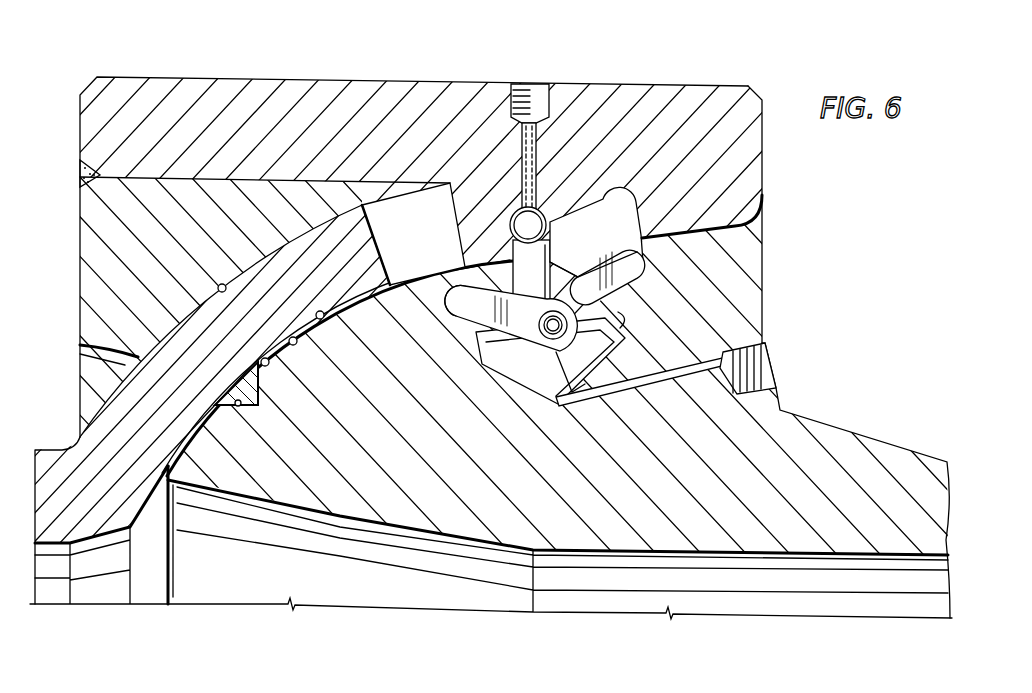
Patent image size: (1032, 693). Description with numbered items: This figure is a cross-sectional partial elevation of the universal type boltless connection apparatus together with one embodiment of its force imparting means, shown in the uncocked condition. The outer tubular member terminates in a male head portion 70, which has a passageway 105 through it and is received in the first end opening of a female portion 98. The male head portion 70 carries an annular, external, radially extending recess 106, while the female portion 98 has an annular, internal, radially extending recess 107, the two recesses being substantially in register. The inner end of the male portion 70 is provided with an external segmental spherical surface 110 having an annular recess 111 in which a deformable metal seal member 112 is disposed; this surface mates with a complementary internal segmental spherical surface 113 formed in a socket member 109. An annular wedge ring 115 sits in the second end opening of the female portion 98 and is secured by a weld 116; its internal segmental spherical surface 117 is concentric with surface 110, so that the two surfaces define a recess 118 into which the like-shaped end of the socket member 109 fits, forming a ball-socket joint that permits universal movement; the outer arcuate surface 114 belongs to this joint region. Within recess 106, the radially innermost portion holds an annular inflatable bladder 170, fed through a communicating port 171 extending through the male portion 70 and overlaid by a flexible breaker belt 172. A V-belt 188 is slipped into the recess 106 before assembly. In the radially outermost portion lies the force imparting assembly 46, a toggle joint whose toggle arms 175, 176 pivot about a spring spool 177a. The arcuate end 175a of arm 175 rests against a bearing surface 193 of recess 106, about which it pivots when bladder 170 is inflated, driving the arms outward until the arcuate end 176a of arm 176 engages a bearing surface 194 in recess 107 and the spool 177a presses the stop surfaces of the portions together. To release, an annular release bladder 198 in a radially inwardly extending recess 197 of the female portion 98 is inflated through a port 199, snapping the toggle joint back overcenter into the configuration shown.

The second force imparting assembly 46 is at (488, 270).
The male head portion 70 is at (795, 440).
The female portion 98 is at (237, 88).
The passageway 105 is at (748, 590).
The annular external radially extending recess 106 is at (627, 317).
The annular internal radially extending recess 107 is at (619, 230).
The socket member 109 is at (100, 417).
The external segmental spherical surface 110 is at (321, 320).
The external annularly extending recess 111 is at (237, 406).
The seal member 112 is at (258, 390).
The internal segmental spherical surface 113 is at (292, 337).
The arcuate surface 114 is at (305, 227).
The annular wedge ring 115 is at (122, 190).
The weld 116 is at (79, 164).
The internal segmental spherical surface 117 is at (222, 284).
The recess 118 is at (408, 213).
The inflatable bladder 170 is at (513, 365).
The communicating port 171 is at (690, 385).
The flexible breaker belt 172 is at (633, 292).
The toggle arm 175 is at (477, 312).
The arcuate end 175a is at (448, 300).
The toggle arm 176 is at (612, 352).
The arcuate end 176a is at (740, 233).
The spool 177a is at (553, 340).
The V-belt 188 is at (633, 207).
The bearing surface 193 is at (405, 372).
The bearing surface 194 is at (675, 170).
The annular radially inwardly extending recess 197 is at (545, 240).
The release bladder 198 is at (541, 210).
The port 199 is at (528, 85).